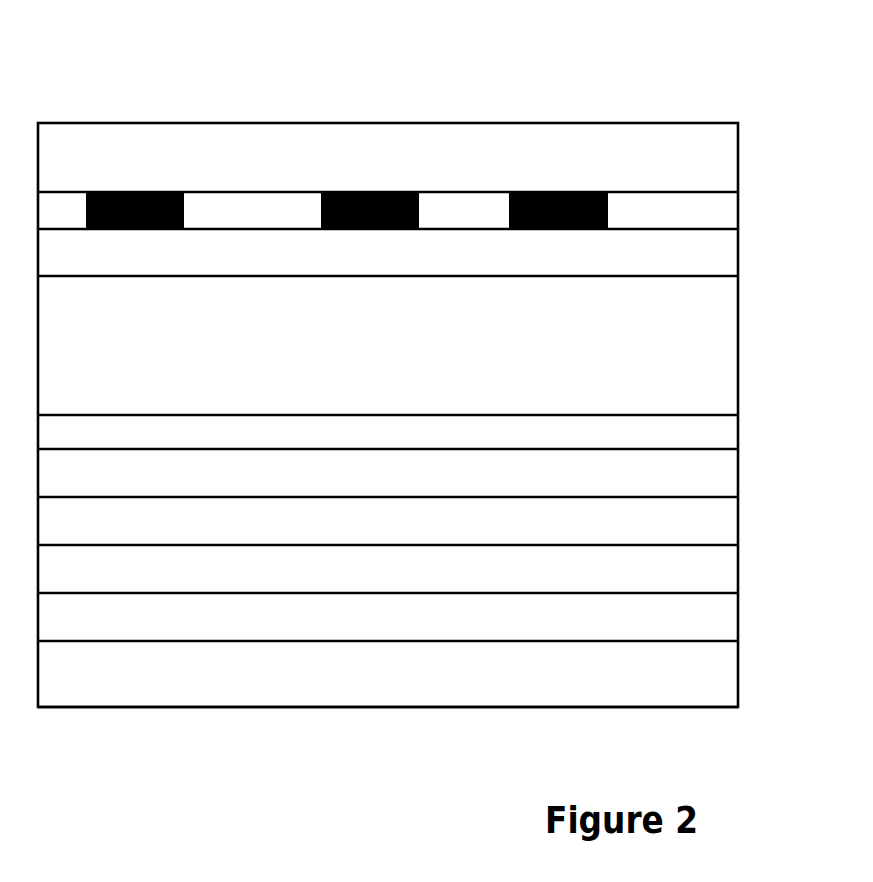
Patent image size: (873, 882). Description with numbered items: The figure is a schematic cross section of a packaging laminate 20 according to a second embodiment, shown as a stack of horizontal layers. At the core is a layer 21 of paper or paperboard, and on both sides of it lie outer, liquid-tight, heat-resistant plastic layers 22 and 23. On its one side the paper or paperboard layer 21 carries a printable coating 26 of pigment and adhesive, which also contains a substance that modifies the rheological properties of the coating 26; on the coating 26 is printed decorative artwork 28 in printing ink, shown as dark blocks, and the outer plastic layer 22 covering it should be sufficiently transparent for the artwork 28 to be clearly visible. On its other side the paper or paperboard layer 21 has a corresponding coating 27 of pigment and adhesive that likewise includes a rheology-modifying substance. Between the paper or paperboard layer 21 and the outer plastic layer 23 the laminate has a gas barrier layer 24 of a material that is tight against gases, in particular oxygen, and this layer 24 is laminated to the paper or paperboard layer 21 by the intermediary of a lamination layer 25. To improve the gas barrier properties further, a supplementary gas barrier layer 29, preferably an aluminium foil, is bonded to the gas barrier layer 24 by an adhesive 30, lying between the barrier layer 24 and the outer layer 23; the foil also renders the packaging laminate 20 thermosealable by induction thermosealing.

The packaging laminate 20 is at (647, 80).
The paper or paperboard layer 21 is at (725, 349).
The outer liquid-tight heat-resistant plastic layer 22 is at (725, 159).
The outer liquid-tight heat-resistant plastic layer 23 is at (725, 679).
The gas barrier layer 24 is at (725, 529).
The lamination layer 25 is at (725, 481).
The printable coating 26 is at (725, 259).
The coating 27 is at (725, 437).
The printed decorative artwork 28 is at (130, 196).
The supplementary gas barrier layer 29 is at (725, 622).
The adhesive 30 is at (725, 576).